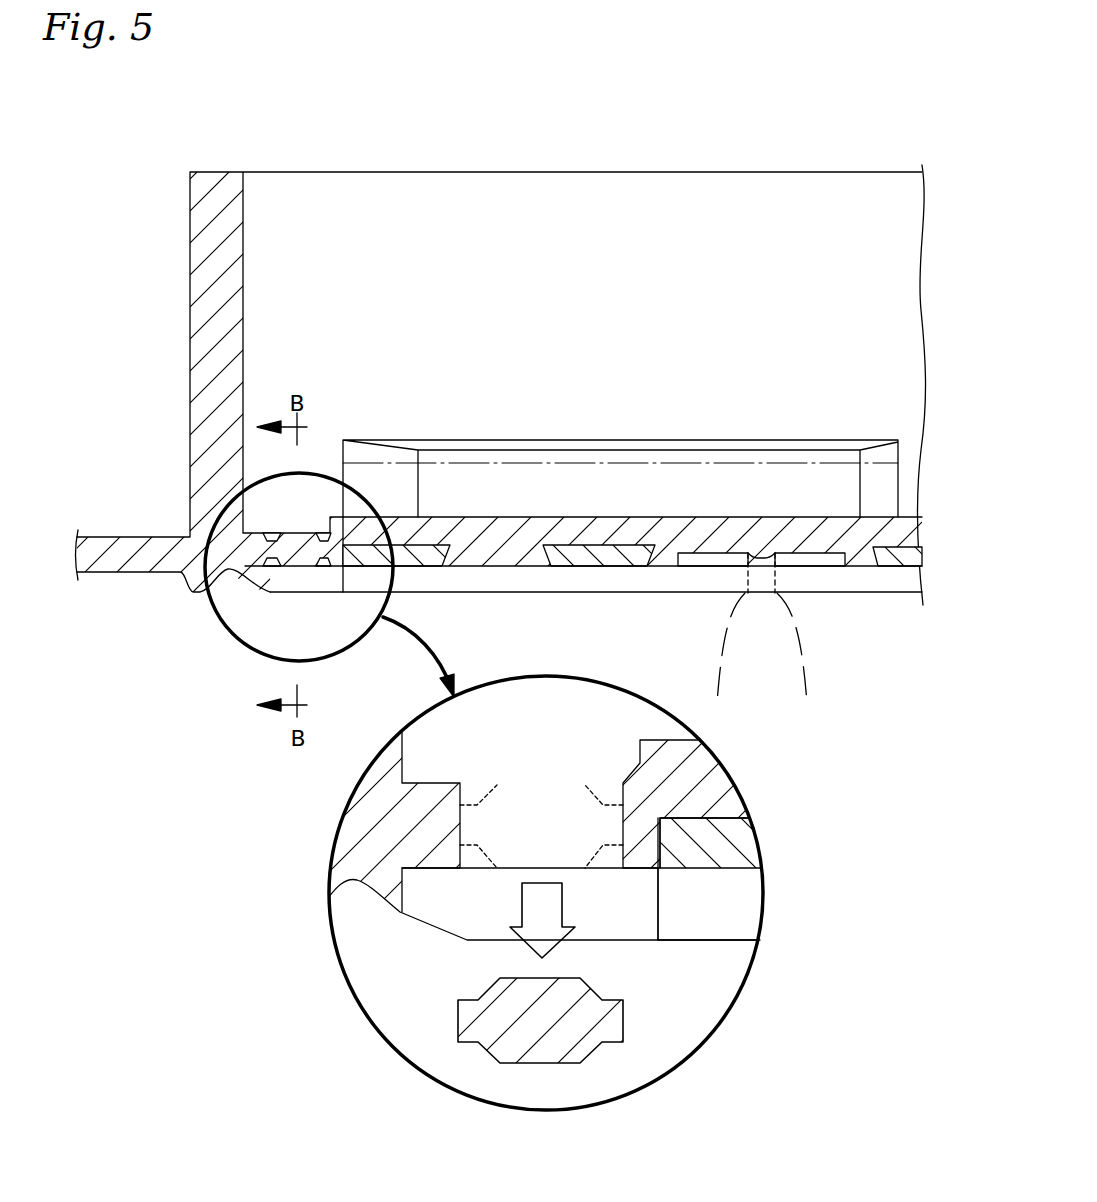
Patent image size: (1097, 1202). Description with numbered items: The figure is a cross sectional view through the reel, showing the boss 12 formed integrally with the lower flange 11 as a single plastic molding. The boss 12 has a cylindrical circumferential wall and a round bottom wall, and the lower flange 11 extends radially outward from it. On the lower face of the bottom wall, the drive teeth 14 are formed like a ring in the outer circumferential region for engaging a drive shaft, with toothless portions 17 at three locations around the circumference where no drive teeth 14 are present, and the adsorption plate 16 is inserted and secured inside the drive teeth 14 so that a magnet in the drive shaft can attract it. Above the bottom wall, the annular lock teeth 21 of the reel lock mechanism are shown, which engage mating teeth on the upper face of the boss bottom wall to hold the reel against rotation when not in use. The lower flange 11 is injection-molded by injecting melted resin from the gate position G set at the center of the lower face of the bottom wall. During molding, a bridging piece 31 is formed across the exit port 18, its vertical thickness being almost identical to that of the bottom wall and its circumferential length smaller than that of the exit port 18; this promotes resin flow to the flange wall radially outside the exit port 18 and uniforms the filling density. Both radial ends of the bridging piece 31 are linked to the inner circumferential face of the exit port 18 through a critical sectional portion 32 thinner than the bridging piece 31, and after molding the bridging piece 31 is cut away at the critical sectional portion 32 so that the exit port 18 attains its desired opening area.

The lower flange 11 is at (350, 827).
The boss 12 is at (190, 330).
The drive teeth 14 is at (317, 587).
The adsorption plate 16 is at (619, 567).
The toothless portion 17 is at (640, 872).
The exit port 18 is at (323, 530).
The lock teeth 21 is at (382, 455).
The bridging piece 31 is at (300, 557).
The critical sectional portion 32 is at (463, 1022).
The gate position G is at (763, 562).